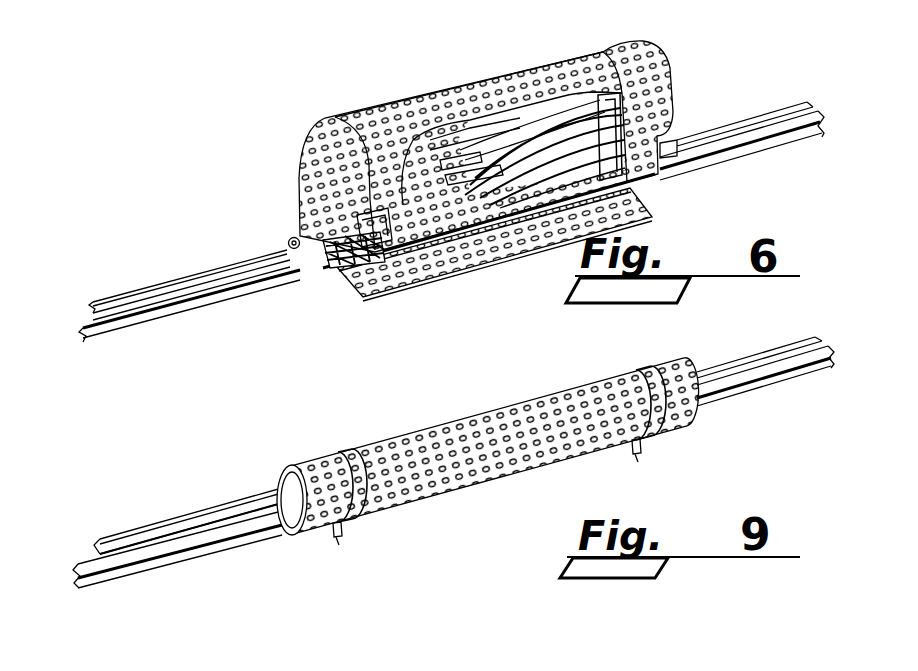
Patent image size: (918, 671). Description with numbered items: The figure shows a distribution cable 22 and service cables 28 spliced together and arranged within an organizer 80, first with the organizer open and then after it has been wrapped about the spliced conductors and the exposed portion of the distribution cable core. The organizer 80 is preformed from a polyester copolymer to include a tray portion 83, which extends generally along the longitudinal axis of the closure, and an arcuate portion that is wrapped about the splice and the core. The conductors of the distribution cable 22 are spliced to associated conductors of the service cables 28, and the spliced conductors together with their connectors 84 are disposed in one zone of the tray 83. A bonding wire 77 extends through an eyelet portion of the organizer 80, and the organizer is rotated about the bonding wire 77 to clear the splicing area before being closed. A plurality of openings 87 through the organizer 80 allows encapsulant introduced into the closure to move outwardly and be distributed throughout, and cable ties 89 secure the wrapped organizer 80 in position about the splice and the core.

In FIG. 6, the distribution cable 22 is at (216, 298).
In FIG. 9, the distribution cable 22 is at (163, 547).
In FIG. 6, the service cables 28 is at (745, 148).
In FIG. 9, the service cables 28 is at (177, 520).
In FIG. 6, the bonding wire 77 is at (310, 232).
In FIG. 6, the organizer 80 is at (367, 116).
In FIG. 9, the organizer 80 is at (487, 478).
In FIG. 6, the tray portion 83 is at (334, 273).
In FIG. 6, the connectors 84 is at (480, 117).
In FIG. 6, the openings 87 is at (433, 94).
In FIG. 9, the cable ties 89 is at (348, 527).